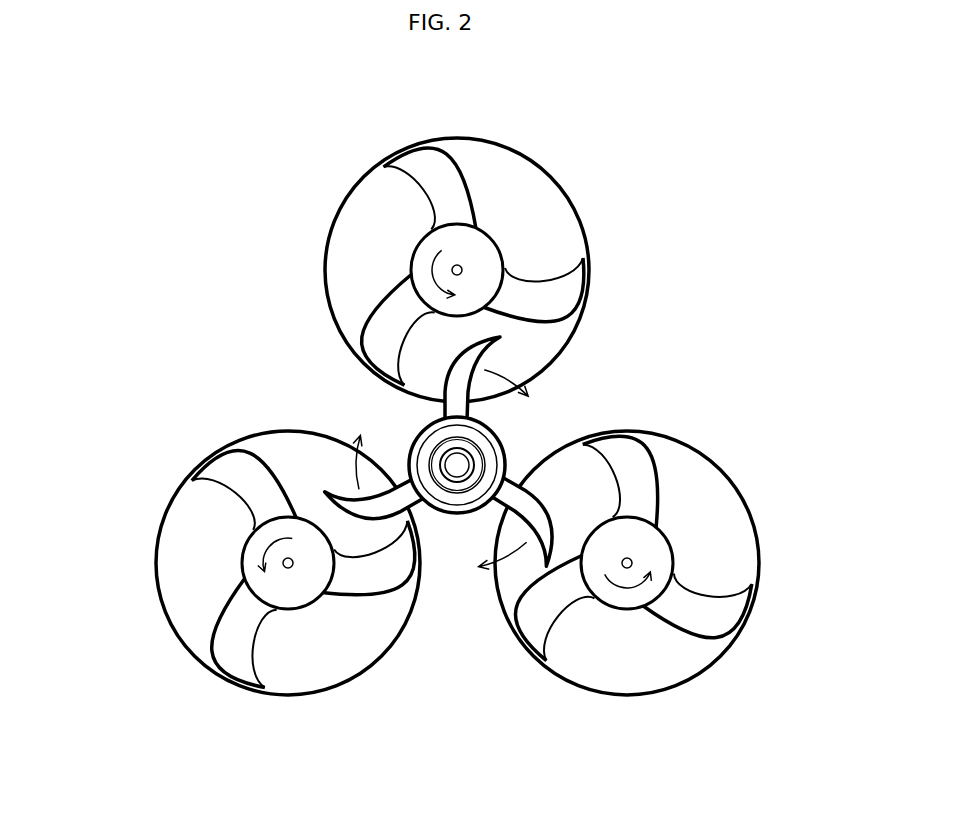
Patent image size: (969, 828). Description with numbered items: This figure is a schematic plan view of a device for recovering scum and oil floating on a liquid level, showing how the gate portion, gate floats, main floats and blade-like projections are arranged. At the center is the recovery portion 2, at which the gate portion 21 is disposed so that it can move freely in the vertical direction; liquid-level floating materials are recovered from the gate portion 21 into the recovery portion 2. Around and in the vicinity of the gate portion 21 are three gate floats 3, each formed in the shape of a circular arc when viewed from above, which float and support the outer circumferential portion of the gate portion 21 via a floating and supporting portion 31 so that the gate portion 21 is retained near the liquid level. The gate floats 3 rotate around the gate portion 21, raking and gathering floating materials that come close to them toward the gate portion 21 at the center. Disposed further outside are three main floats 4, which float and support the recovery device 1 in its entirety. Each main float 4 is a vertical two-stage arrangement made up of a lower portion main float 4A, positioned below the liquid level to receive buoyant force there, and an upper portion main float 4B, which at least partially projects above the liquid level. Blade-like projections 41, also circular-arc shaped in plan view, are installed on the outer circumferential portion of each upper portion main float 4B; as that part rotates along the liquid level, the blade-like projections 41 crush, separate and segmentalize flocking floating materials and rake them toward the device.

The recovery device 1 is at (165, 115).
The recovery portion 2 is at (452, 511).
The gate portion 21 is at (470, 448).
The gate float 3 is at (492, 347).
The floating and supporting portion 31 is at (434, 506).
The main float 4 is at (460, 445).
The lower portion main float 4A is at (537, 190).
The upper portion main float 4B is at (497, 258).
The blade-like projection 41 is at (380, 320).